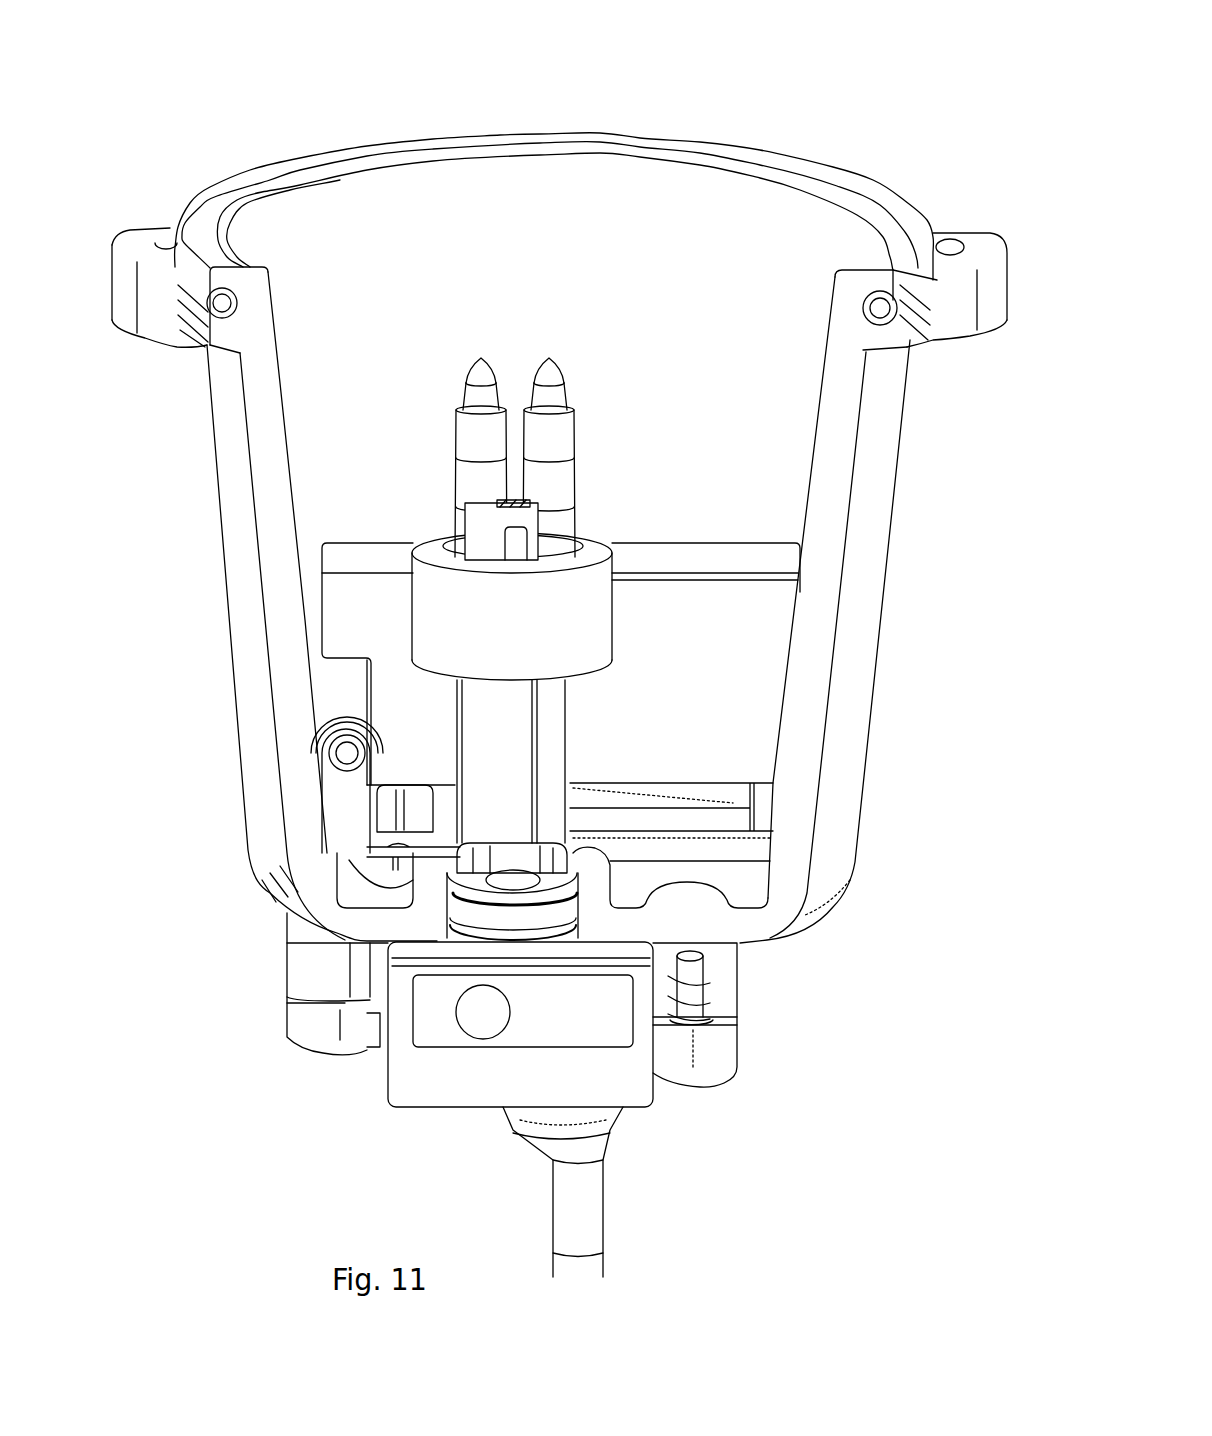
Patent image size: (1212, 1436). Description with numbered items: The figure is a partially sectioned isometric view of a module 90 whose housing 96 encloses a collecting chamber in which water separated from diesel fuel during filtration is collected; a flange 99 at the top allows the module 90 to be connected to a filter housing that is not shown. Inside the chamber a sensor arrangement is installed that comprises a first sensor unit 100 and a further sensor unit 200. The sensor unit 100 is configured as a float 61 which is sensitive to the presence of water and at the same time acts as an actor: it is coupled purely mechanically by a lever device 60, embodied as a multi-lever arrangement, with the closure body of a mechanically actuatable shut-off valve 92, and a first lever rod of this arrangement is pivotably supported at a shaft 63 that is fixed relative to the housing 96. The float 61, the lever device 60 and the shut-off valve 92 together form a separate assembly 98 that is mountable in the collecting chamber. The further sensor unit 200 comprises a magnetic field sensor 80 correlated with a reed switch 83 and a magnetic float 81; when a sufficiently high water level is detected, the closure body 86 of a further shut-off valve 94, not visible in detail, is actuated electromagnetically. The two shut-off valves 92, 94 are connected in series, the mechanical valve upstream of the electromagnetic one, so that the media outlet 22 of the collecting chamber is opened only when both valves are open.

The flange 99 is at (655, 130).
The module 90 is at (873, 182).
The separate assembly 98 is at (680, 320).
The sensor unit 100 is at (706, 381).
The housing 96 is at (899, 500).
The further sensor unit 200 is at (432, 507).
The magnetic field sensor 80 is at (455, 537).
The reed switch 83 is at (600, 540).
The magnetic float 81 is at (540, 656).
The float 61 is at (758, 578).
The shaft 63 is at (341, 757).
The lever device 60 is at (774, 671).
The shut-off valve 92 is at (347, 838).
The further shut-off valve 94 is at (440, 932).
The closure body 86 is at (560, 898).
The media outlet 22 is at (585, 1237).